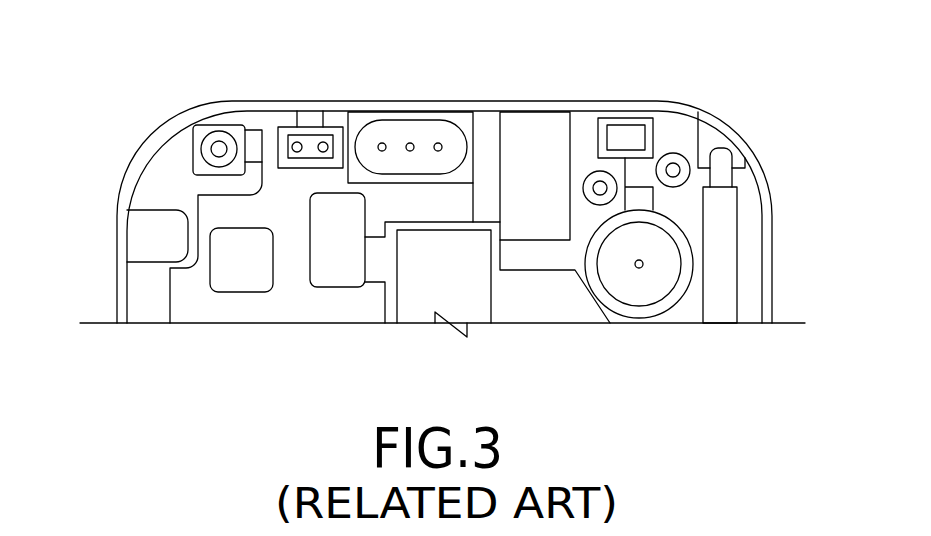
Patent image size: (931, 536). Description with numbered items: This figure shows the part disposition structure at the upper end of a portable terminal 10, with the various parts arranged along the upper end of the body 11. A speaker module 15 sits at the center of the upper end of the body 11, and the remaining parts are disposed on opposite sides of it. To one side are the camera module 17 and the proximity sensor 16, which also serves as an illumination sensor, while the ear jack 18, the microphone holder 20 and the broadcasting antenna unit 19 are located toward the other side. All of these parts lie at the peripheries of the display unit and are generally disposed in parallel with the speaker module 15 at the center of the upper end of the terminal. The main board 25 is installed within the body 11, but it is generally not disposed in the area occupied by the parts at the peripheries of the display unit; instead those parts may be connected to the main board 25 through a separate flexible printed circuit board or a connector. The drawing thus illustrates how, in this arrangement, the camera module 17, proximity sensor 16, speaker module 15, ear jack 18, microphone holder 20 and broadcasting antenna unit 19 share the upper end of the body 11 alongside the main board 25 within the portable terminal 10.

The electronic device 10 is at (135, 32).
The body 11 is at (109, 158).
The speaker module 15 is at (413, 128).
The proximity sensor 16 is at (313, 133).
The camera module 17 is at (218, 128).
The ear jack 18 is at (541, 130).
The broadcasting antenna unit 19 is at (723, 250).
The microphone holder 20 is at (627, 133).
The main board 25 is at (287, 312).